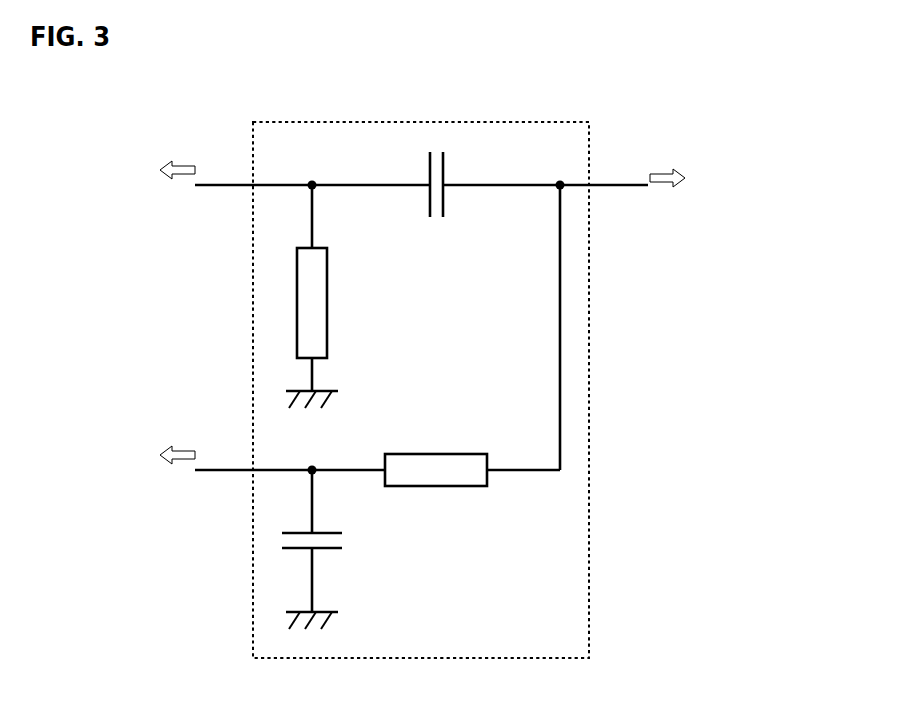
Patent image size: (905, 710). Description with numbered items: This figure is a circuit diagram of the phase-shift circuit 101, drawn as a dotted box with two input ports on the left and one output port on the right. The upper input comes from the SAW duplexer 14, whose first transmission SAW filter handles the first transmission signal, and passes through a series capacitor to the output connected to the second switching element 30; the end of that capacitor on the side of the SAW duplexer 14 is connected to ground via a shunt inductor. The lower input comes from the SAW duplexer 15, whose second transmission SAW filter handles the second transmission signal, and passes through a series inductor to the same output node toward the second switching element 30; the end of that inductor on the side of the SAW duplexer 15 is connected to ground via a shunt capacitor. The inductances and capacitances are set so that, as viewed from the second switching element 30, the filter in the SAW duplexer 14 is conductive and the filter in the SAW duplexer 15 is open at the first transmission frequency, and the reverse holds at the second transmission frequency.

The SAW duplexer 14 is at (231, 172).
The SAW duplexer 15 is at (215, 485).
The second switching element 30 is at (630, 202).
The phase-shift circuit 101 is at (572, 107).